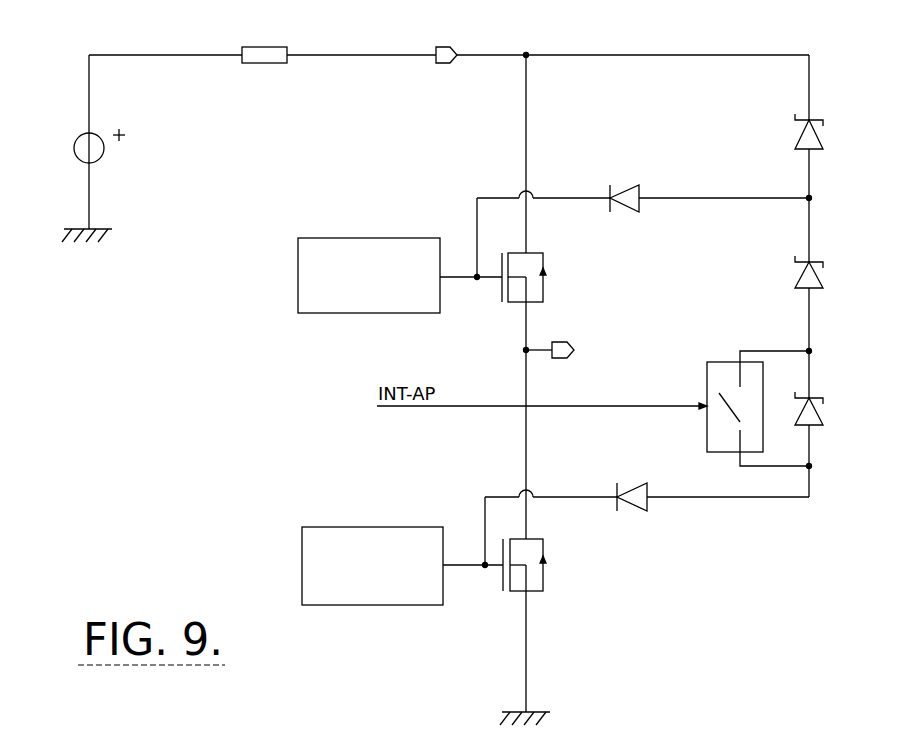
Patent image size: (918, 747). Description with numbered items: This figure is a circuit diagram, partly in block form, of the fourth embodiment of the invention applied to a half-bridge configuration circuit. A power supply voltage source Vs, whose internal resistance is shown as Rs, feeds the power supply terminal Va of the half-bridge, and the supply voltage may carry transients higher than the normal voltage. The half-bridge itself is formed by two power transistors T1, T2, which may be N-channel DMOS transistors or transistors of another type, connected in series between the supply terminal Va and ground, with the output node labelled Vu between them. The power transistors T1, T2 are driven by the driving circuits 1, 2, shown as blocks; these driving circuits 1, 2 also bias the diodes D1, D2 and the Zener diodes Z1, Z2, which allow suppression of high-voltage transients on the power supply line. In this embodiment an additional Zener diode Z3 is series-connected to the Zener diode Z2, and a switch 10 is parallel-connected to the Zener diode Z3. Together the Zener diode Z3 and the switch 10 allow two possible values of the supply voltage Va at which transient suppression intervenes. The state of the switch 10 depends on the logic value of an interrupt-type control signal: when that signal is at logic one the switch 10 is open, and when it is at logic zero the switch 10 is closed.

The driving circuit 1 is at (351, 275).
The driving circuit 2 is at (354, 566).
The switch 10 is at (723, 461).
The power transistor T1 is at (528, 265).
The power transistor T2 is at (542, 559).
The diode D1 is at (624, 183).
The diode D2 is at (631, 482).
The Zener diode Z1 is at (792, 119).
The Zener diode Z2 is at (792, 265).
The additional Zener diode Z3 is at (833, 407).
The internal resistance Rs is at (264, 37).
The power supply voltage source Vs is at (81, 146).
The power supply terminal Va is at (444, 37).
The voltage terminal Vu is at (549, 334).